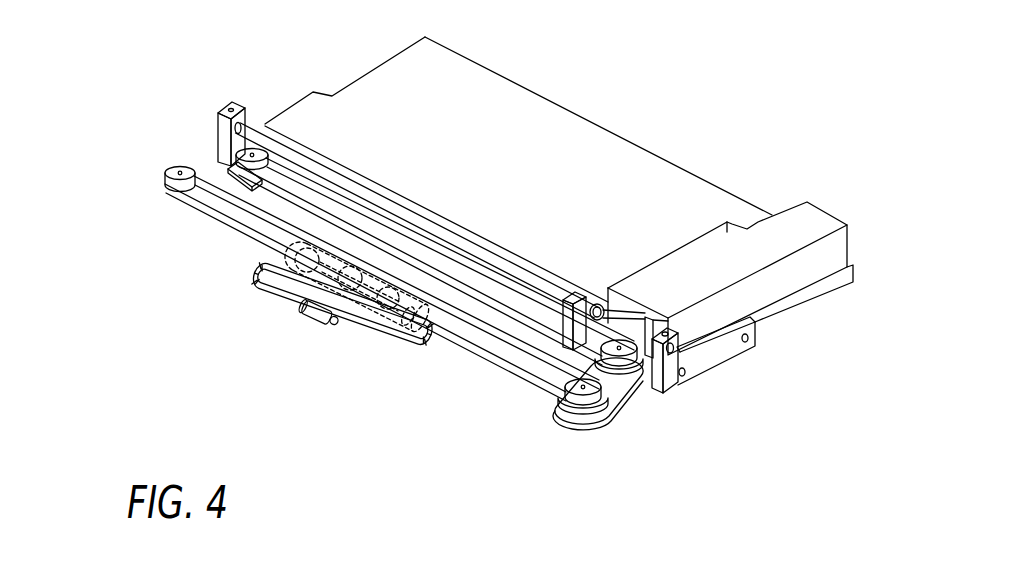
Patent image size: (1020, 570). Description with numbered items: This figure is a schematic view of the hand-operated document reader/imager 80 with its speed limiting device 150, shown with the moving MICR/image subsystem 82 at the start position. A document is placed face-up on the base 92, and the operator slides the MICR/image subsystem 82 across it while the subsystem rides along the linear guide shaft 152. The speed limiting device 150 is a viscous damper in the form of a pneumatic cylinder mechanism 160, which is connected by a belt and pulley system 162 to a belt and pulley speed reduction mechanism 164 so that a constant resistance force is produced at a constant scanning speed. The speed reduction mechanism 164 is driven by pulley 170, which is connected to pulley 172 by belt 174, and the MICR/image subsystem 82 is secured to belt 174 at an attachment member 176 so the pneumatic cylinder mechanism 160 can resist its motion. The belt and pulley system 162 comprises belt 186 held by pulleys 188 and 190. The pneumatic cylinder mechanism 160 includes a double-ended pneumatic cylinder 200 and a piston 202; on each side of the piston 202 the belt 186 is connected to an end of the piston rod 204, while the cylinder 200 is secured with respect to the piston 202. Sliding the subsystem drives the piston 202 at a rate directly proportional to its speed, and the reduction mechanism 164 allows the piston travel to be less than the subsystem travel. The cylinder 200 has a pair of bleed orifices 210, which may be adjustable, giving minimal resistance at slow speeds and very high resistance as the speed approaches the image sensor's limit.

The hand-operated document reader/imager 80 is at (648, 72).
The moving MICR/image subsystem 82 is at (807, 204).
The base 92 is at (485, 68).
The speed limiting device 150 is at (323, 360).
The linear guide shaft 152 is at (276, 122).
The pneumatic cylinder mechanism 160 is at (258, 260).
The belt and pulley system 162 is at (484, 382).
The belt and pulley speed reduction mechanism 164 is at (622, 418).
The pulley 170 is at (649, 393).
The pulley 172 is at (218, 122).
The belt 174 is at (235, 165).
The attachment member 176 is at (583, 300).
The belt 186 is at (196, 207).
The pulley 188 is at (578, 390).
The pulley 190 is at (164, 173).
The double-ended pneumatic cylinder 200 is at (420, 335).
The piston 202 is at (385, 330).
The piston rod 204 is at (300, 316).
The bleed orifices 210 is at (345, 243).